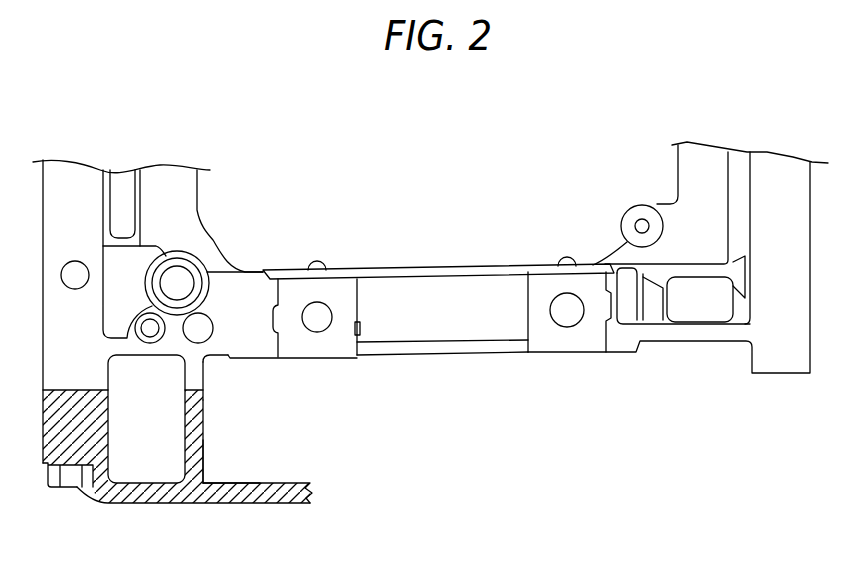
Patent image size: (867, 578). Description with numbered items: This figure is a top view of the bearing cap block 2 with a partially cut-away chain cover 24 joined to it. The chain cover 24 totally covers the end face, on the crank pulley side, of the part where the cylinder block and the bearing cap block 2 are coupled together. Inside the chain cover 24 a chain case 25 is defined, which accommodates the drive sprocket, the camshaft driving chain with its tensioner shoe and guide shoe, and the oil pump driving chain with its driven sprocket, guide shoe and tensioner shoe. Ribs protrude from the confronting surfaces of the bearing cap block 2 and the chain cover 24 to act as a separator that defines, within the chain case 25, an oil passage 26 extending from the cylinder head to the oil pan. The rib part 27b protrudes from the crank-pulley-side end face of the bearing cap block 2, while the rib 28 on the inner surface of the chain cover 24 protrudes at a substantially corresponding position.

The bearing cap block 2 is at (430, 331).
The chain cover 24 is at (247, 503).
The chain case 25 is at (302, 438).
The oil passage 26 is at (170, 442).
The rib part 27b is at (203, 373).
The rib 28 is at (203, 458).